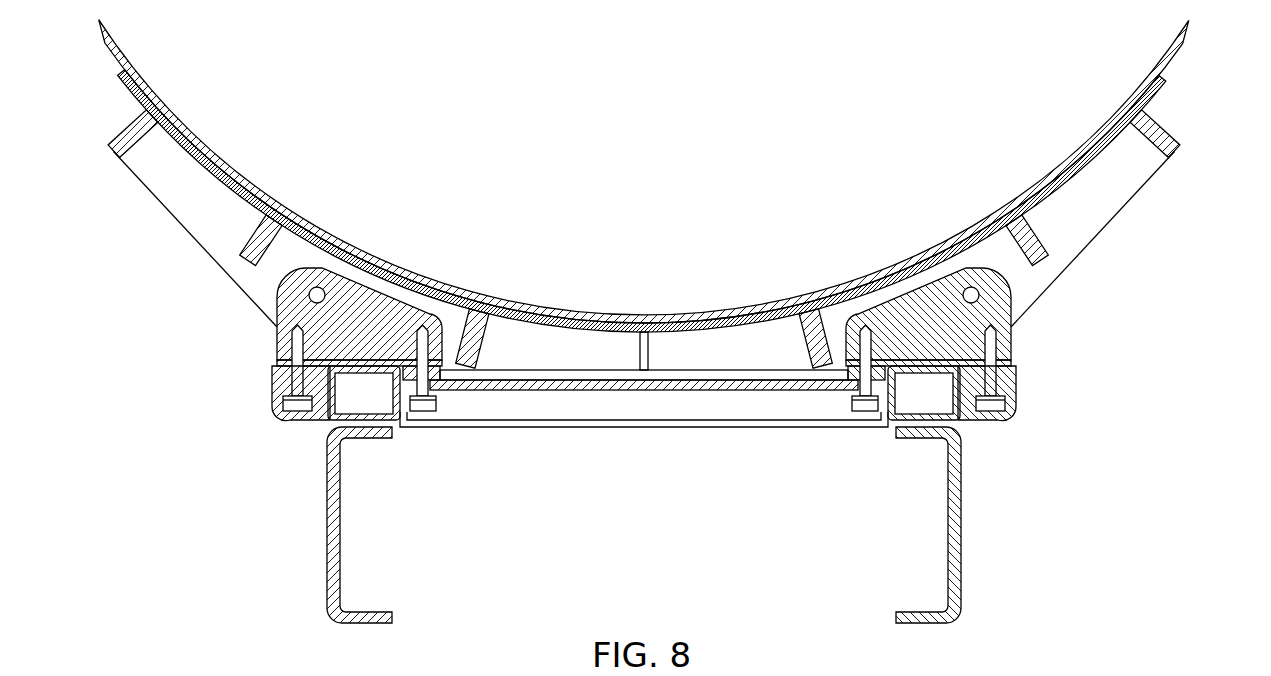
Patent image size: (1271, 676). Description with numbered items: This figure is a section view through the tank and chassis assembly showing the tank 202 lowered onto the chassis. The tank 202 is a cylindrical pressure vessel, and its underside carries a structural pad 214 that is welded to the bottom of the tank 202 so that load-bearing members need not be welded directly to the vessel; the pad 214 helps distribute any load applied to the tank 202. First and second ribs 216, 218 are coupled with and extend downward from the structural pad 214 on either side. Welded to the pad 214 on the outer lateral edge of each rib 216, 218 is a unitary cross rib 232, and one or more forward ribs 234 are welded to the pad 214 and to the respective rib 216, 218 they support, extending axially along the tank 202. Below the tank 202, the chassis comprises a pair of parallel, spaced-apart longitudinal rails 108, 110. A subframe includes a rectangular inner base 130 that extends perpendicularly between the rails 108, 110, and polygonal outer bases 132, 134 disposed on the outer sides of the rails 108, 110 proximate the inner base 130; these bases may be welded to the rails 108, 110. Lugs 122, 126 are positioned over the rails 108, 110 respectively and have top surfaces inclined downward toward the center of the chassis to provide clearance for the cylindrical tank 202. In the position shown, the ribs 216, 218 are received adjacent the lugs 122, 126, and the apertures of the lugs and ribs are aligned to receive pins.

The tank 202 is at (108, 48).
The structural pad 214 is at (128, 96).
The cross rib 232 is at (100, 150).
The second rib 218 is at (160, 203).
The first rib 216 is at (1128, 204).
The forward rib 234 is at (250, 252).
The fourth lug 126 is at (333, 293).
The second lug 122 is at (957, 297).
The outer base 134 is at (274, 385).
The outer base 132 is at (1014, 385).
The inner base 130 is at (730, 422).
The longitudinal rail 110 is at (327, 545).
The longitudinal rail 108 is at (962, 528).